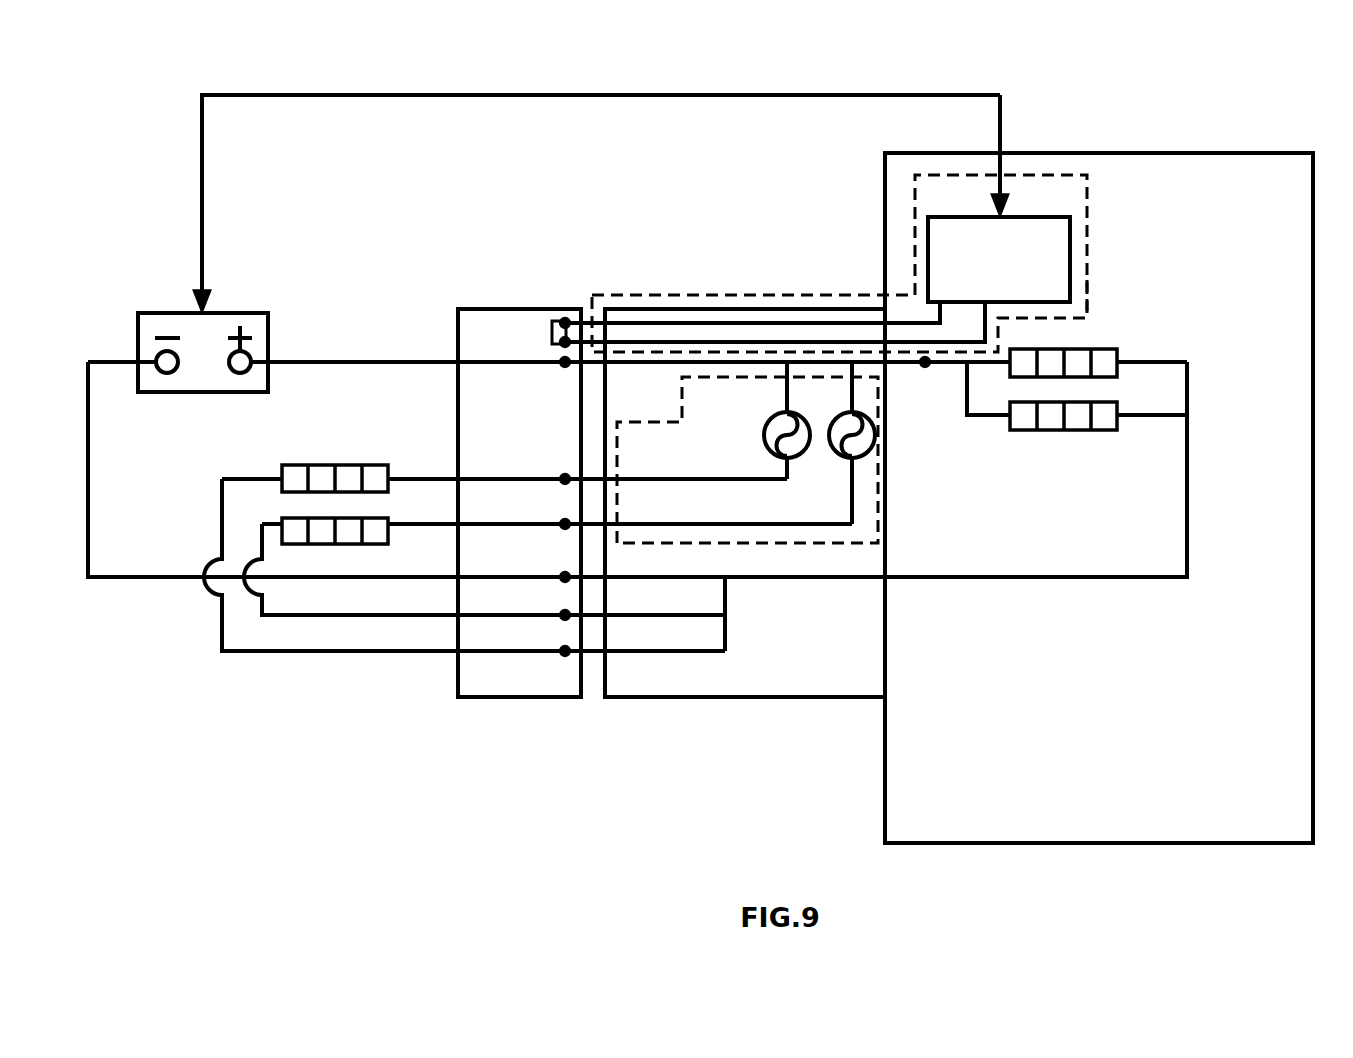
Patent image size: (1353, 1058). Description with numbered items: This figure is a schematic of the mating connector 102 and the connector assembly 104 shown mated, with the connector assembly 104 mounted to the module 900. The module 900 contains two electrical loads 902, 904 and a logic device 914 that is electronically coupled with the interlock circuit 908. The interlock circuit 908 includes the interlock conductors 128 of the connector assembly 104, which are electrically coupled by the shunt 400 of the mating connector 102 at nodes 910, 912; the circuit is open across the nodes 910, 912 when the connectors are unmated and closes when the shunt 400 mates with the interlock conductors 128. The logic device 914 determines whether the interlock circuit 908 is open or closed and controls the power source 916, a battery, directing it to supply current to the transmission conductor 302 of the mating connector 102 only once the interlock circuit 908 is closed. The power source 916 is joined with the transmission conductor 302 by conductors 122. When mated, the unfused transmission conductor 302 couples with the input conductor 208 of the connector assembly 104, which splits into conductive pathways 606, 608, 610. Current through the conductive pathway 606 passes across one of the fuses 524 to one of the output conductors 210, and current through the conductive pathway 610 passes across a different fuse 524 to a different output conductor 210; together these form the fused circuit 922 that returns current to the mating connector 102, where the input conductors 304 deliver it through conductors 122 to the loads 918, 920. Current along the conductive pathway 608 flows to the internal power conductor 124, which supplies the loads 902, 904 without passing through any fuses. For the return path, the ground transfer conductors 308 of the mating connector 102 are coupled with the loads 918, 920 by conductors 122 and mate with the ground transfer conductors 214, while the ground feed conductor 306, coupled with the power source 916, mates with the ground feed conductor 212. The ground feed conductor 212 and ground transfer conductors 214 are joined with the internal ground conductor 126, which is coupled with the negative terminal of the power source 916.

The mating connector 102 is at (527, 700).
The connector assembly 104 is at (730, 700).
The conductors 122 is at (324, 362).
The internal power conductor 124 is at (958, 367).
The internal ground conductor 126 is at (1010, 580).
The interlock conductors 128 is at (750, 323).
The input conductor 208 is at (613, 368).
The output conductors 210 is at (630, 476).
The ground feed conductor 212 is at (618, 580).
The ground transfer conductors 214 is at (618, 618).
The transmission conductor 302 is at (480, 366).
The input conductors 304 is at (485, 478).
The ground feed conductor 306 is at (478, 580).
The ground transfer conductors 308 is at (478, 618).
The shunt 400 is at (553, 332).
The fuses 524 is at (765, 432).
The conductive pathway 606 is at (786, 400).
The conductive pathway 608 is at (872, 363).
The conductive pathway 610 is at (851, 400).
The module 900 is at (1095, 153).
The first load 902 is at (1097, 348).
The second load 904 is at (1108, 398).
The interlock circuit 908 is at (1090, 280).
The node 910 is at (567, 310).
The node 912 is at (580, 318).
The logic device 914 is at (1070, 233).
The power source 916 is at (240, 313).
The load 918 is at (323, 465).
The load 920 is at (350, 510).
The fused circuit 922 is at (857, 545).